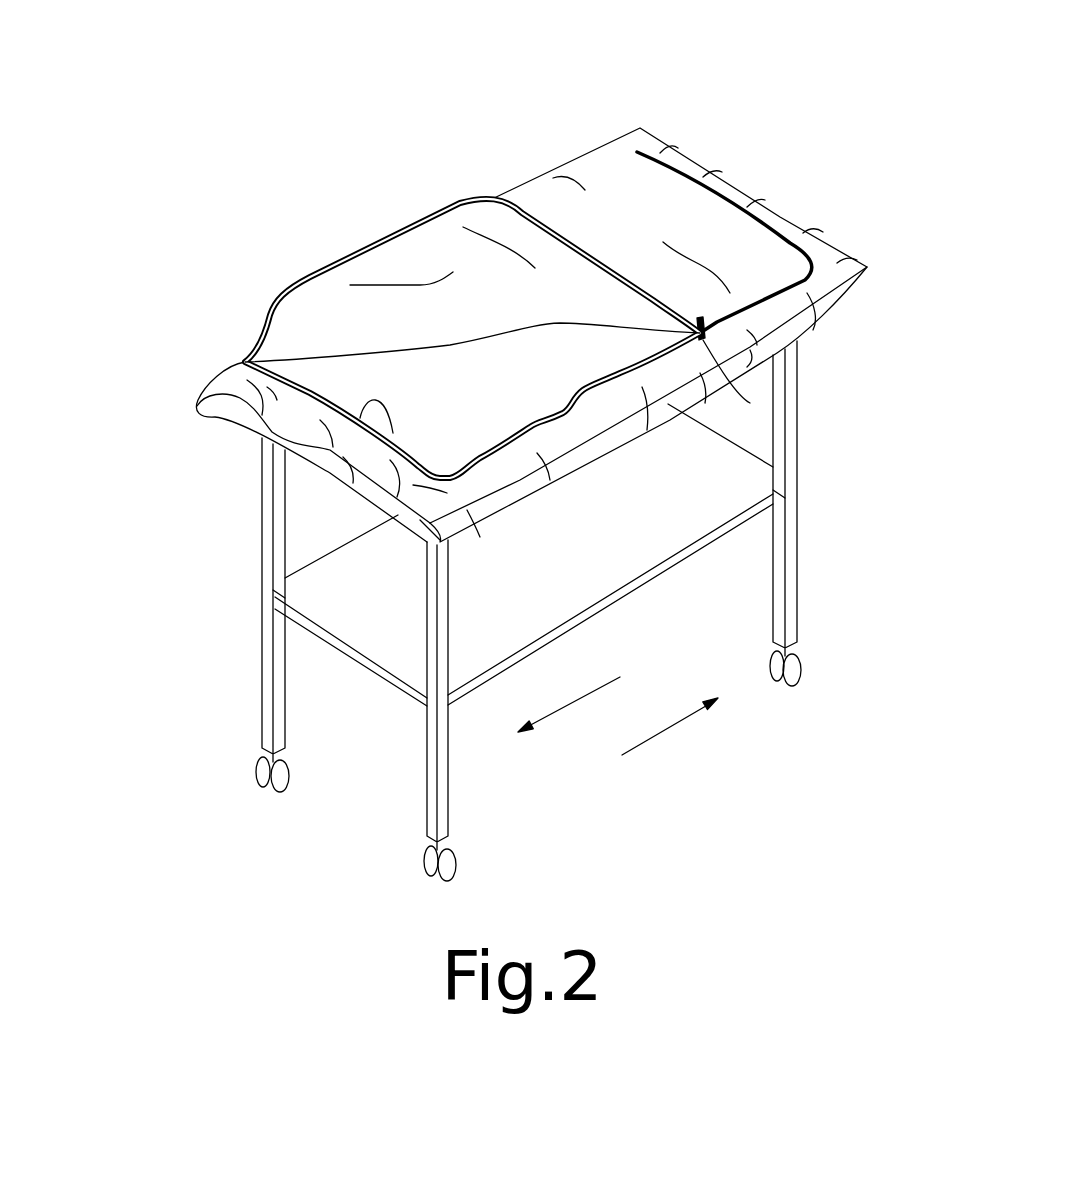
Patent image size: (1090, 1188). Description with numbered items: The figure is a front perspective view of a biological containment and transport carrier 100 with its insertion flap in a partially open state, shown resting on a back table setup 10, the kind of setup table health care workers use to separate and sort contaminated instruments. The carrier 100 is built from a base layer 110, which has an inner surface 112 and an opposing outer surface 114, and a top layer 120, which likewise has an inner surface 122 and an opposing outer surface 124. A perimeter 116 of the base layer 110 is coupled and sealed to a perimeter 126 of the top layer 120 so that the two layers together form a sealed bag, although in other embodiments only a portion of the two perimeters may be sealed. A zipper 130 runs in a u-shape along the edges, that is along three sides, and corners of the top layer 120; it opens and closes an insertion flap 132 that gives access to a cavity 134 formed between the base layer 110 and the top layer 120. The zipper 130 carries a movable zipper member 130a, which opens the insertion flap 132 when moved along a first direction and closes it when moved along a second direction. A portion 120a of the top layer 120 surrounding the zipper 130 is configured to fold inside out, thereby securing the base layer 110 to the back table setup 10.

The biological containment and transport carrier 100 is at (140, 191).
The back table setup 10 is at (244, 618).
The base layer 110 is at (817, 293).
The inner surface of the base layer 112 is at (350, 462).
The outer surface of the base layer 114 is at (367, 482).
The perimeter of the base layer 116 is at (226, 415).
The top layer 120 is at (840, 268).
The portion of the top layer surrounding the zipper 120a is at (783, 201).
The inner surface of the top layer 122 is at (300, 313).
The outer surface of the top layer 124 is at (562, 195).
The perimeter of the top layer 126 is at (225, 385).
The zipper 130 is at (683, 173).
The movable zipper member 130a is at (757, 403).
The insertion flap 132 is at (377, 230).
The cavity 134 is at (289, 361).